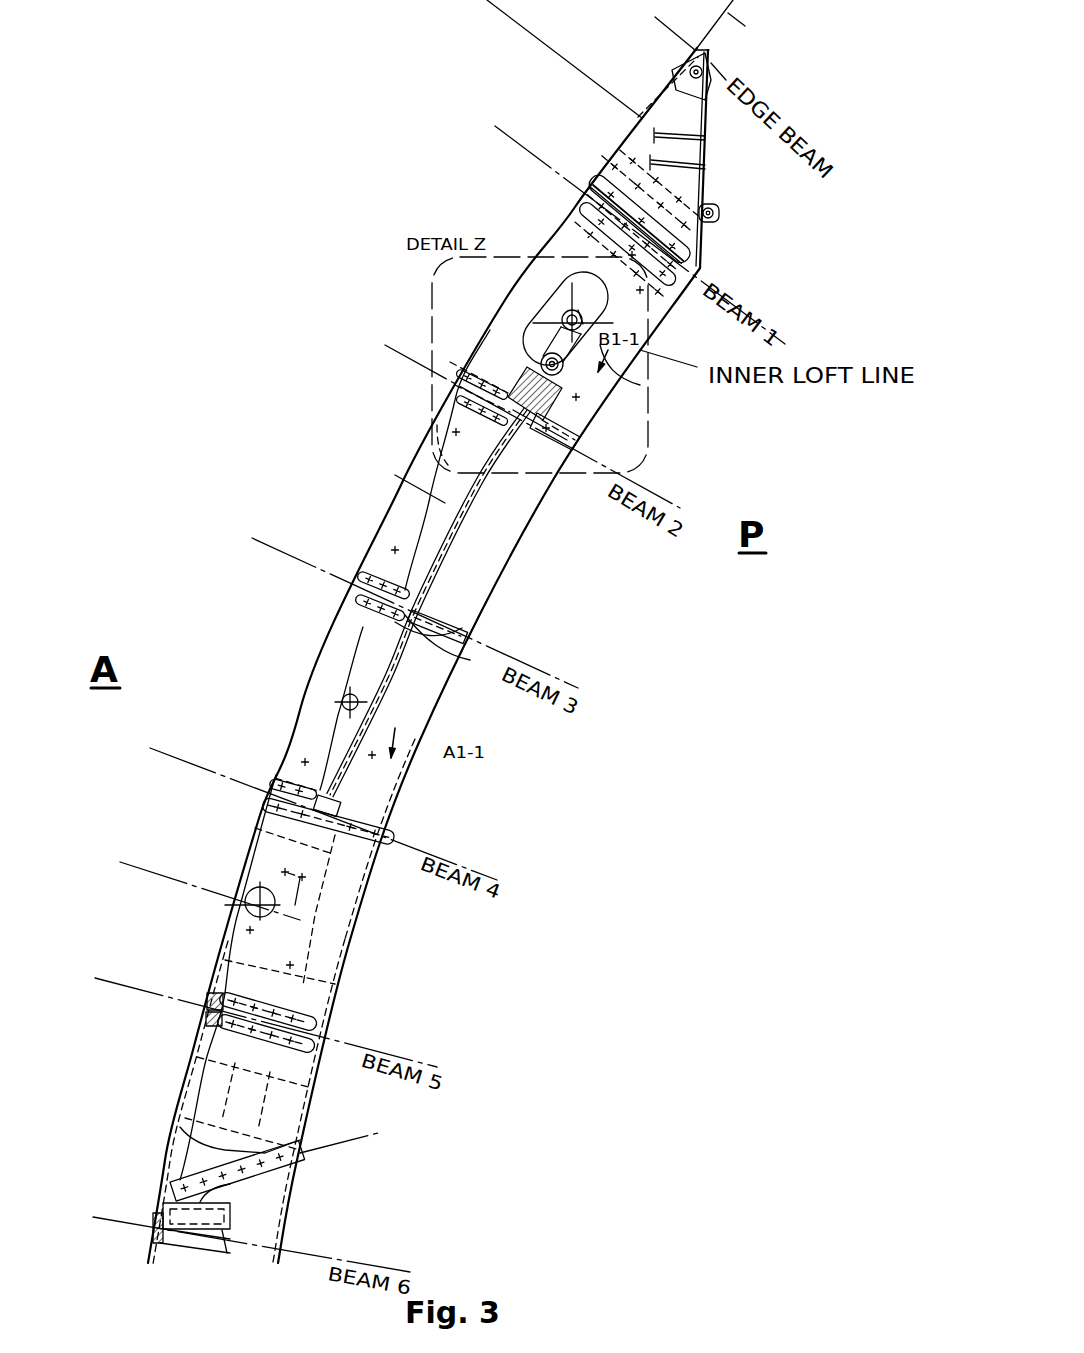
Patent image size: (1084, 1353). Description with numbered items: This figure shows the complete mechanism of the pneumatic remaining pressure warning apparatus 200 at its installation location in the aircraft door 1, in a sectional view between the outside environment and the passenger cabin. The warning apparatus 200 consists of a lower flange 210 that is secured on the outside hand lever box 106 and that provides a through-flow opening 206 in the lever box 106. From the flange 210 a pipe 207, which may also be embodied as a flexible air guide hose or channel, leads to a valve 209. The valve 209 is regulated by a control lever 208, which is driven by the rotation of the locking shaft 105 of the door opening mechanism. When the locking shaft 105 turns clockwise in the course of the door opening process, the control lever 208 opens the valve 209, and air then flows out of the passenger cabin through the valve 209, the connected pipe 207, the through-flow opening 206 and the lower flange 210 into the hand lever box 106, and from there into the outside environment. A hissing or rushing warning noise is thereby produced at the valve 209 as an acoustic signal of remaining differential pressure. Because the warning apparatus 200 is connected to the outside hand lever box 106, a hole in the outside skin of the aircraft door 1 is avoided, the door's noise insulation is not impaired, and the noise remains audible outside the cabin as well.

The aircraft door 1 is at (843, 85).
The locking shaft 105 is at (568, 333).
The outside hand lever box 106 is at (343, 968).
The warning apparatus 200 is at (420, 273).
The through-flow opening 206 is at (300, 850).
The pipe 207 is at (440, 556).
The control lever 208 is at (562, 370).
The valve 209 is at (527, 372).
The lower flange 210 is at (320, 790).